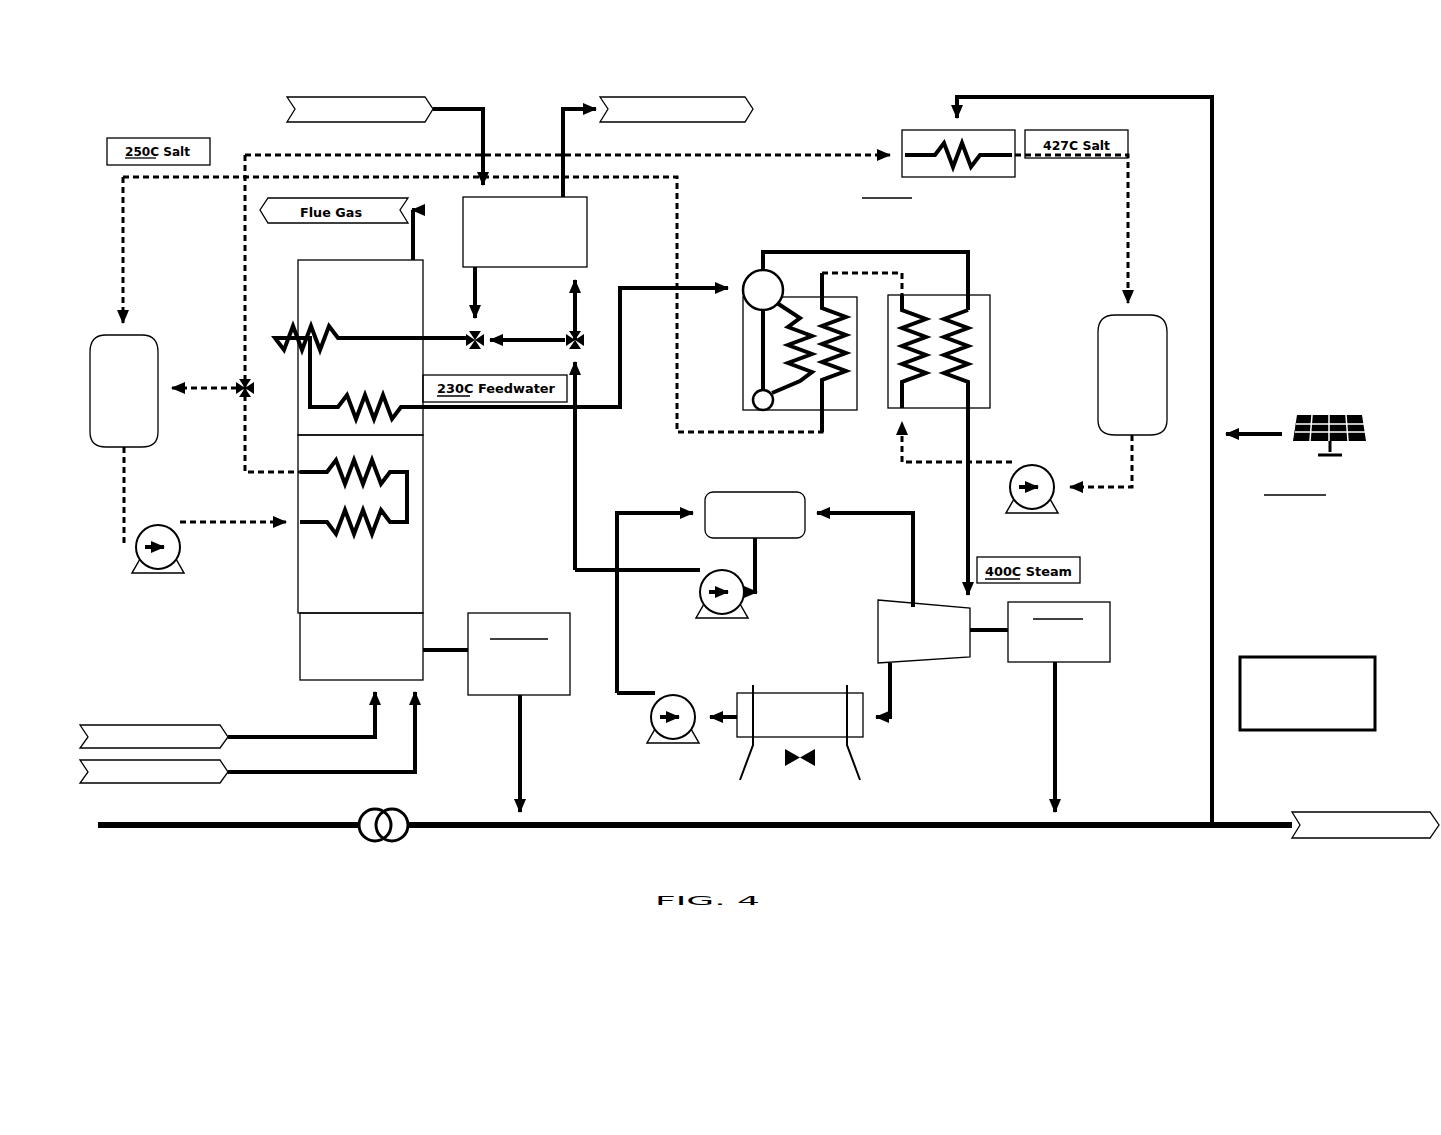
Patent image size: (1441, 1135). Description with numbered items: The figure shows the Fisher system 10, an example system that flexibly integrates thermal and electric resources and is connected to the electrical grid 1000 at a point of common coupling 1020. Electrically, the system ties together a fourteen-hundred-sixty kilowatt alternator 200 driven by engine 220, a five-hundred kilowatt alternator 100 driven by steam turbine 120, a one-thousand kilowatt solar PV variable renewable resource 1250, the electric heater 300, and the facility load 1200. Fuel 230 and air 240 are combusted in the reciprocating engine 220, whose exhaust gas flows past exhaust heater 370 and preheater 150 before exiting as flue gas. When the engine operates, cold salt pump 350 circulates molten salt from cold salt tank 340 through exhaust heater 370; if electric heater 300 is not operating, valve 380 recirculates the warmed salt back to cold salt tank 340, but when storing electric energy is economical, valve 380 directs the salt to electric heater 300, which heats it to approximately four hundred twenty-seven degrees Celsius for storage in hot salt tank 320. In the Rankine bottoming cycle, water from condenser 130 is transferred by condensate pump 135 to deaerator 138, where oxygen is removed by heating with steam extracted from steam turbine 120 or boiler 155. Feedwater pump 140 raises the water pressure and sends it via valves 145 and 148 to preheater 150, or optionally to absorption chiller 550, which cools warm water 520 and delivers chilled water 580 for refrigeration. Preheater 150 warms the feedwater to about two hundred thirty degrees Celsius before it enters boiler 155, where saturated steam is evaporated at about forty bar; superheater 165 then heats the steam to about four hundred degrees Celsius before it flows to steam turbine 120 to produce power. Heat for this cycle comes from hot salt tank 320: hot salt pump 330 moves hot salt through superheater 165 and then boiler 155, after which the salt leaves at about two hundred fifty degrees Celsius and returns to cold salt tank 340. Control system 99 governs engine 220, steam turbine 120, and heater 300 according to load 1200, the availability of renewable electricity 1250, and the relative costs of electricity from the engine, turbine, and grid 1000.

The Fisher system 10 is at (1238, 222).
The control system 99 is at (1307, 693).
The 500 kW alternator 100 is at (1059, 707).
The steam turbine 120 is at (942, 658).
The condenser 130 is at (786, 734).
The condensate pump 135 is at (665, 738).
The deaerator 138 is at (765, 592).
The feedwater pump 140 is at (665, 619).
The valve 145 is at (561, 450).
The valve 148 is at (515, 352).
The preheater 150 is at (501, 347).
The boiler 155 is at (842, 342).
The superheater 165 is at (980, 445).
The 1460 kW alternator 200 is at (519, 712).
The engine 220 is at (384, 646).
The fuel 230 is at (227, 720).
The air 240 is at (247, 737).
The electric heater 300 is at (960, 164).
The hot salt tank 320 is at (1132, 375).
The hot salt pump 330 is at (1047, 499).
The cold salt tank 340 is at (124, 391).
The cold salt pump 350 is at (158, 562).
The exhaust heater 370 is at (360, 524).
The valve 380 is at (231, 399).
The warm water 520 is at (385, 141).
The absorption chiller 550 is at (525, 268).
The chilled water 580 is at (658, 147).
The grid 1000 is at (149, 839).
The point of common coupling 1020 is at (382, 841).
The facility load 1200 is at (1365, 825).
The solar PV variable renewable resource 1250 is at (1329, 455).